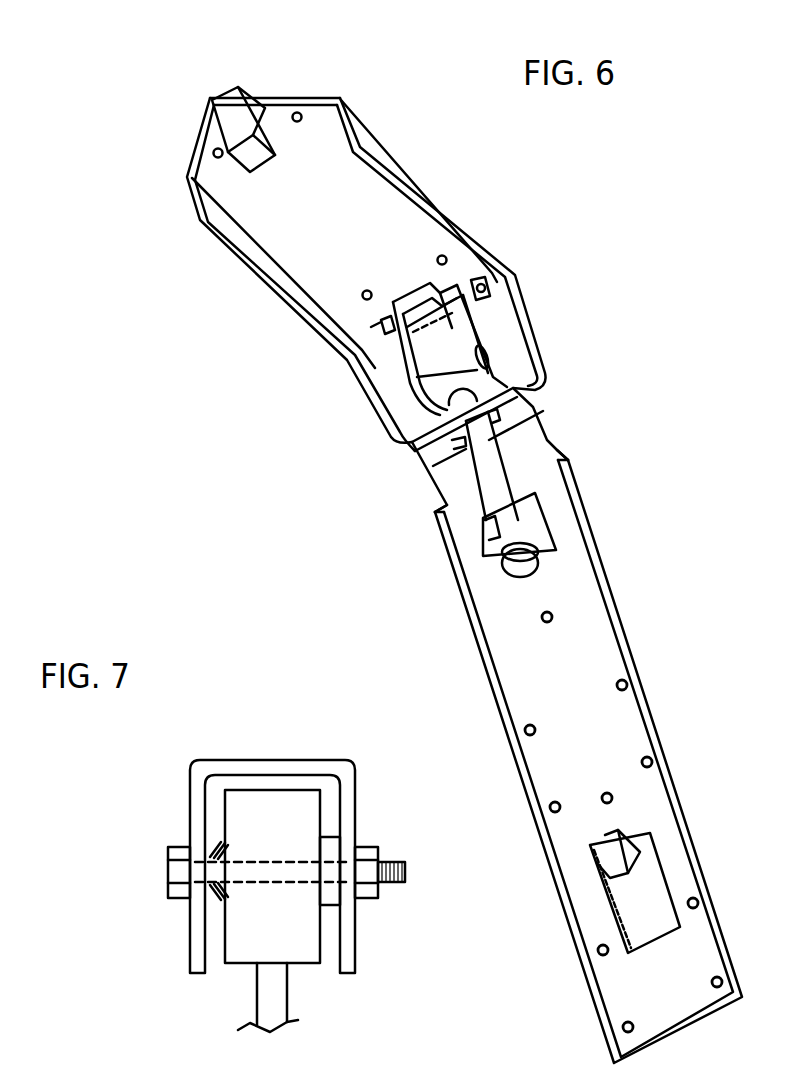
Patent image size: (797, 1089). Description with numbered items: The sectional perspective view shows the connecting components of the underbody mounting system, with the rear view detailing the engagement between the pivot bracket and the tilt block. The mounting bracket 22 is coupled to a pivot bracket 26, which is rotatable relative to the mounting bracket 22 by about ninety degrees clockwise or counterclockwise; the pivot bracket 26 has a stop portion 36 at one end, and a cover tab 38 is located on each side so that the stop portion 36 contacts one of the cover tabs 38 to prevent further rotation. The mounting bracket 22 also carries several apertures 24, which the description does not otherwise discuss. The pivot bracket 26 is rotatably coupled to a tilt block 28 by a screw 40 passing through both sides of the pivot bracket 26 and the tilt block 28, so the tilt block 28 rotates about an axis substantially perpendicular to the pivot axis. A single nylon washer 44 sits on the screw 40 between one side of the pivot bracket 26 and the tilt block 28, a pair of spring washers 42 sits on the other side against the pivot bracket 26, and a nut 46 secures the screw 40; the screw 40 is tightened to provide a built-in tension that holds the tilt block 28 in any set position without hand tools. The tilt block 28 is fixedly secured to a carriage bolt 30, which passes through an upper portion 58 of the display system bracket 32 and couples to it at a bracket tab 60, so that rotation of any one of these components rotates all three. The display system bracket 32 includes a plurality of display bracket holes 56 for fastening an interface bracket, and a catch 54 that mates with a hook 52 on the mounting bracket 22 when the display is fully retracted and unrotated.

In FIG. 6, the mounting bracket 22 is at (360, 193).
In FIG. 6, the mounting holes 24 is at (300, 111).
In FIG. 6, the pivot bracket 26 is at (484, 285).
In FIG. 7, the pivot bracket 26 is at (327, 757).
In FIG. 6, the tilt block 28 is at (442, 337).
In FIG. 7, the tilt block 28 is at (258, 803).
In FIG. 6, the carriage bolt 30 is at (497, 484).
In FIG. 7, the carriage bolt 30 is at (267, 1000).
In FIG. 6, the display system bracket 32 is at (623, 737).
In FIG. 6, the stop portion 36 is at (424, 286).
In FIG. 6, the cover tab 38 is at (464, 300).
In FIG. 7, the screw 40 is at (176, 849).
In FIG. 7, the spring washers 42 is at (225, 898).
In FIG. 7, the nylon washer 44 is at (323, 905).
In FIG. 7, the nut 46 is at (367, 843).
In FIG. 6, the hook 52 is at (243, 123).
In FIG. 6, the catch 54 is at (616, 849).
In FIG. 6, the display bracket holes 56 is at (553, 613).
In FIG. 6, the upper portion 58 is at (522, 410).
In FIG. 6, the bracket tab 60 is at (556, 550).